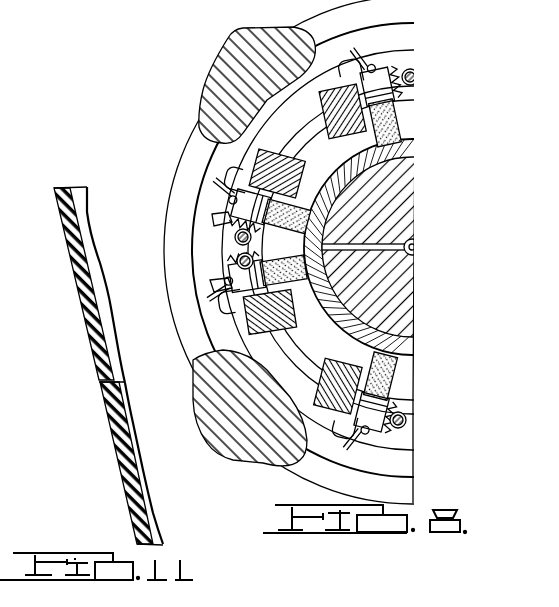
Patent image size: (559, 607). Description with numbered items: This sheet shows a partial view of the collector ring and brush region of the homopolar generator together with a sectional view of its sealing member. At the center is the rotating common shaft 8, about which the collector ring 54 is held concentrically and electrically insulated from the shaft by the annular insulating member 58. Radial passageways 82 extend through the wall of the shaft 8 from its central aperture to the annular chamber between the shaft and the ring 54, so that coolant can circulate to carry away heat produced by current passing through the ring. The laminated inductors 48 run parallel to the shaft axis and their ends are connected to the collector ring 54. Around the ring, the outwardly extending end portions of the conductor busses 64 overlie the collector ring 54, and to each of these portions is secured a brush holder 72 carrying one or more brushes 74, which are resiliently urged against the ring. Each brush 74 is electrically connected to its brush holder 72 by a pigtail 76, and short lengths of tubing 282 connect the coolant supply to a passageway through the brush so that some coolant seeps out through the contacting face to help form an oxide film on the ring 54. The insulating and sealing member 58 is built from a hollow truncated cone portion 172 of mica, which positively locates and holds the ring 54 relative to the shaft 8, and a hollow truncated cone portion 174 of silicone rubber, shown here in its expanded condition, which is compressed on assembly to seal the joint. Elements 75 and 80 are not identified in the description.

In FIG. 8, the common shaft 8 is at (412, 247).
In FIG. 8, the collector ring 54 is at (417, 352).
In FIG. 8, the conductor busses 64 is at (340, 107).
In FIG. 8, the brush holder 72 is at (236, 260).
In FIG. 8, the brushes 74 is at (405, 128).
In FIG. 8, the brush spring 75 is at (363, 133).
In FIG. 8, the pigtail 76 is at (250, 172).
In FIG. 8, the commutator ring 80 is at (417, 340).
In FIG. 8, the radial passageways 82 is at (383, 246).
In FIG. 8, the short lengths of tubing 282 is at (200, 267).
In FIG. 8, the laminated inductors 48 is at (340, 605).
In FIG. 11, the annular insulating members 58 is at (76, 265).
In FIG. 11, the hollow truncated cone portion of mica 172 is at (88, 232).
In FIG. 11, the hollow truncated cone portion of silicone rubber 174 is at (140, 460).